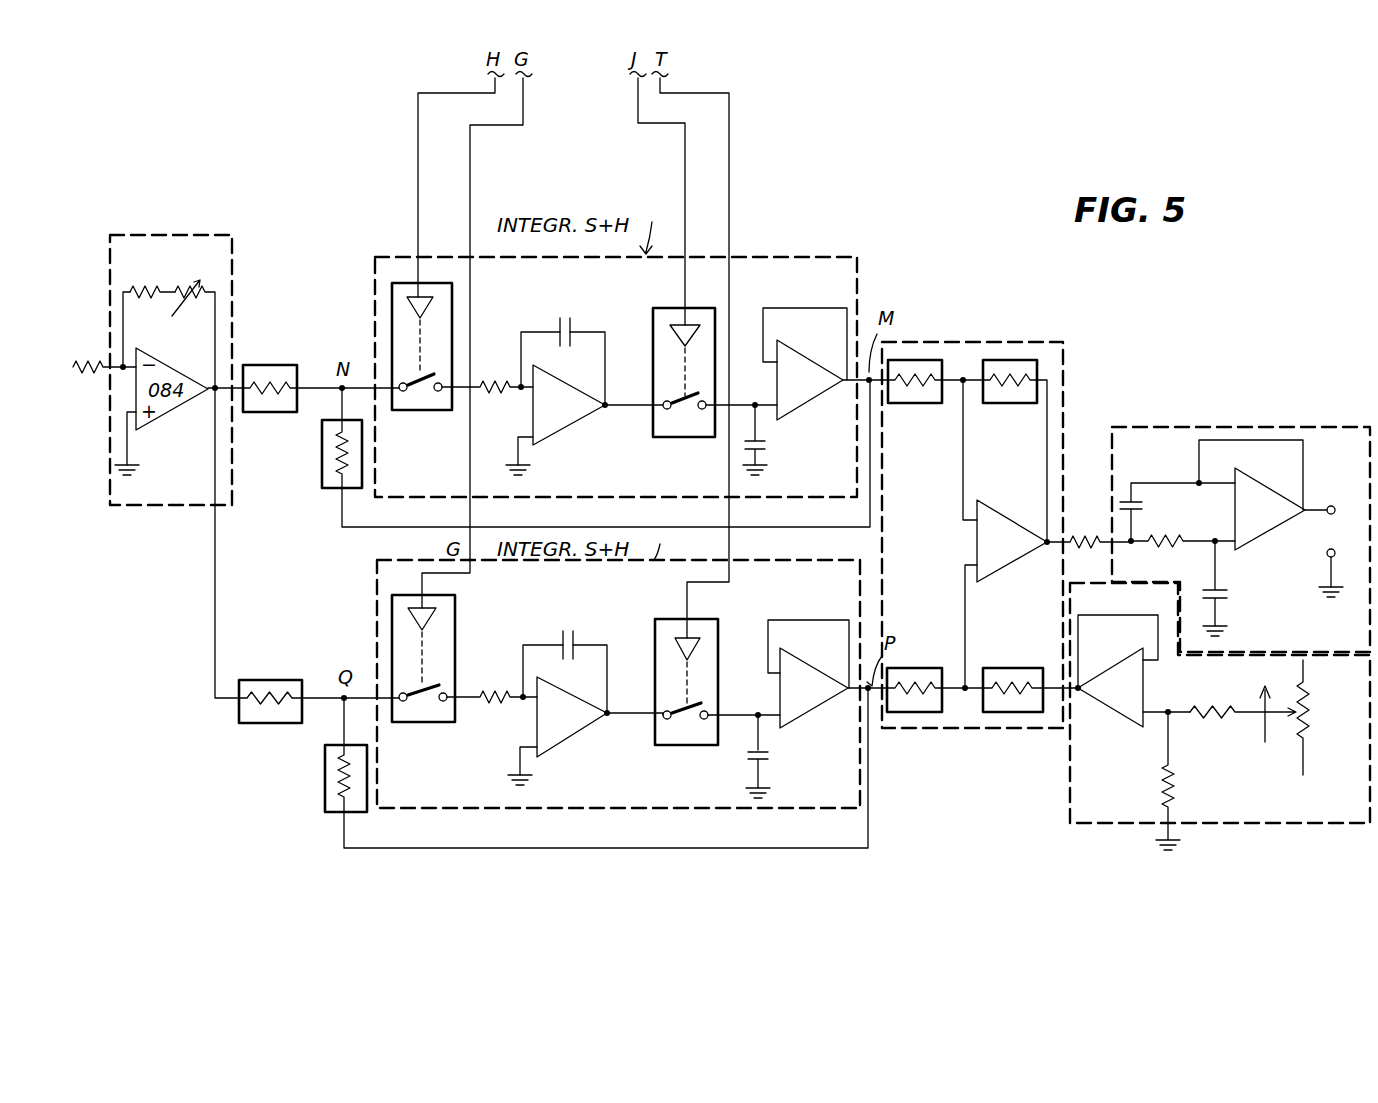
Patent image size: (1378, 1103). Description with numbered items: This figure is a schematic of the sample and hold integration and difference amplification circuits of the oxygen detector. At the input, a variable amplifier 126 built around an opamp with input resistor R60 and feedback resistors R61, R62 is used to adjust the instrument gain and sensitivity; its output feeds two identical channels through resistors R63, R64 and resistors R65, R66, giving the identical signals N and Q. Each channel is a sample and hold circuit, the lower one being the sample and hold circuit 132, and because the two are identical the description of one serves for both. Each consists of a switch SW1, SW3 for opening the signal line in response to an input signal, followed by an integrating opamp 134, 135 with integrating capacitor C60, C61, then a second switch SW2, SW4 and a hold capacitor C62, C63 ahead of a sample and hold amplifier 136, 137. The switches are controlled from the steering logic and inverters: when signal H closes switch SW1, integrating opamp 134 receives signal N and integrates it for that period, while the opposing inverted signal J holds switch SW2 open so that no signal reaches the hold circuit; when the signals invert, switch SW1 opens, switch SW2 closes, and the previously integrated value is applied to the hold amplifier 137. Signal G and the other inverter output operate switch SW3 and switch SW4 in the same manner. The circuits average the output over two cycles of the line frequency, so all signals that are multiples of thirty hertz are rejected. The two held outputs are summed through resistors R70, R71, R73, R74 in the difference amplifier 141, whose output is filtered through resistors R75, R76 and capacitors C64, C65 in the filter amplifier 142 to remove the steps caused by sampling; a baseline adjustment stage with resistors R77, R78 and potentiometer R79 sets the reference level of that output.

The variable amplifier 126 is at (112, 505).
The sample and hold circuit 132 is at (972, 575).
The integrating opamp 134 is at (562, 440).
The integrating opamp 135 is at (583, 738).
The sample and hold amplifier 136 is at (804, 358).
The sample and hold amplifier 137 is at (810, 668).
The difference amplifier 141 is at (1296, 408).
The filter amplifier 142 is at (1204, 832).
The input resistor R60 is at (96, 355).
The feedback resistor R61 is at (149, 281).
The variable gain resistor R62 is at (196, 320).
The resistor R63 is at (270, 375).
The resistor R64 is at (575, 453).
The resistor R65 is at (258, 555).
The resistor R66 is at (575, 768).
The resistor R70 is at (935, 393).
The feedback resistor R71 is at (1015, 451).
The resistor R73 is at (935, 677).
The resistor R74 is at (1030, 677).
The resistor R75 is at (1089, 529).
The resistor R76 is at (1183, 549).
The resistor R77 is at (1189, 781).
The resistor R78 is at (1243, 700).
The potentiometer R79 is at (1324, 719).
The integrating capacitor C60 is at (563, 348).
The integrating capacitor C61 is at (565, 657).
The hold capacitor C62 is at (777, 440).
The hold capacitor C63 is at (780, 756).
The filter capacitor C64 is at (1159, 512).
The filter capacitor C65 is at (1236, 588).
The switch SW1 is at (456, 310).
The second switch SW2 is at (664, 308).
The switch SW3 is at (456, 624).
The second switch SW4 is at (670, 621).